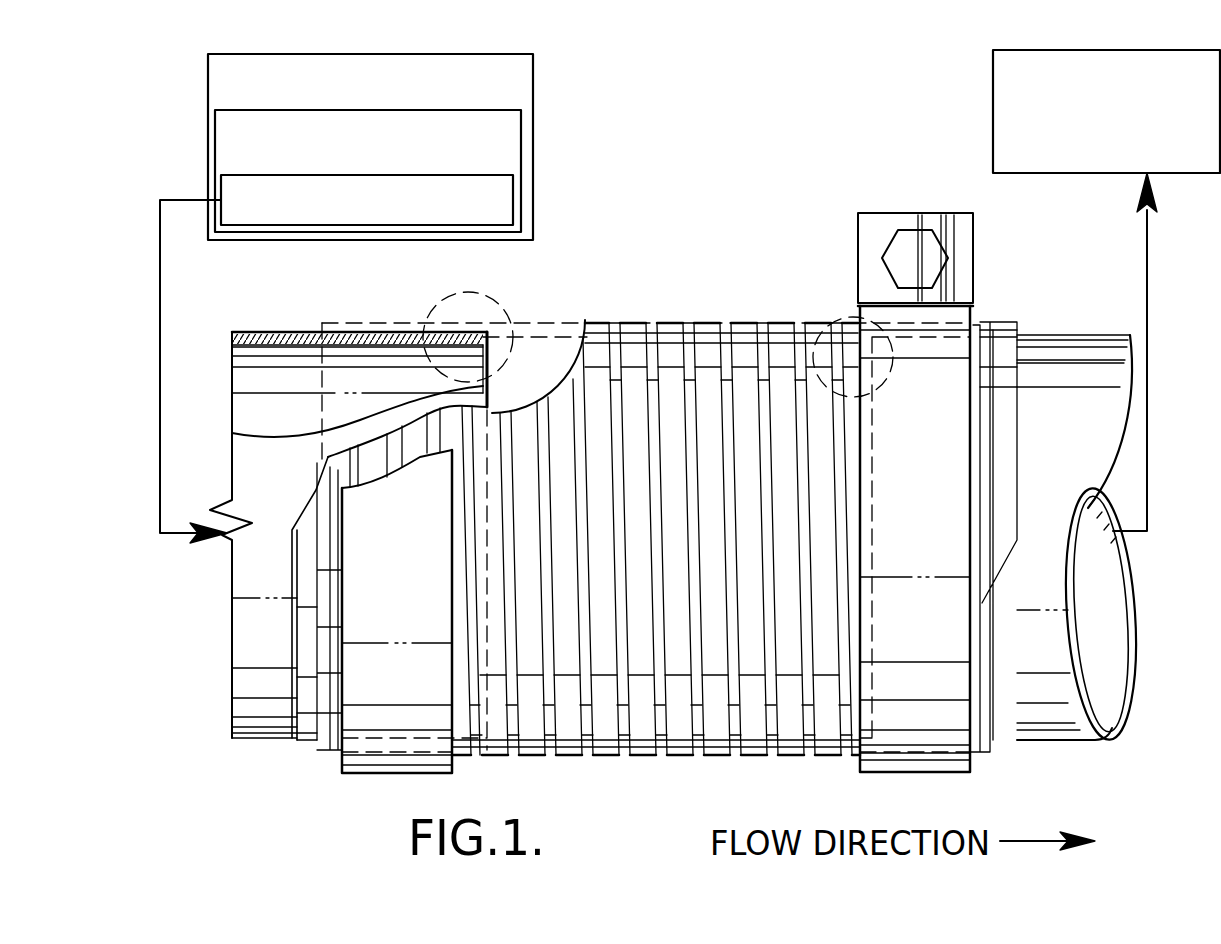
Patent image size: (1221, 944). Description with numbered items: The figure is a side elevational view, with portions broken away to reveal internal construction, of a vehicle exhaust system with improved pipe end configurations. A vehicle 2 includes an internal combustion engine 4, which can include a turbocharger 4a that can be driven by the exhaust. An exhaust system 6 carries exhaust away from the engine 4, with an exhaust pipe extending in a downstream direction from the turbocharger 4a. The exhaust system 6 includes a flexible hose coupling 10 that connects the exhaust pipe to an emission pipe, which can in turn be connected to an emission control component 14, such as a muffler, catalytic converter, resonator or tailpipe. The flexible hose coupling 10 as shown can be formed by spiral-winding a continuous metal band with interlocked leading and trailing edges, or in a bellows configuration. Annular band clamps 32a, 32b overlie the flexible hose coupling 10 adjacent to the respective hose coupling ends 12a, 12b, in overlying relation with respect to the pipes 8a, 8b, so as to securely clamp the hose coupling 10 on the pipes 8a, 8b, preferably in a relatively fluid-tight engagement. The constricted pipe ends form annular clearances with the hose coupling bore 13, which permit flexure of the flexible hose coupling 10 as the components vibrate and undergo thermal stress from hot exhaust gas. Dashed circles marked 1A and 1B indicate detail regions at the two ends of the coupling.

The vehicle 2 is at (514, 86).
The internal combustion engine 4 is at (514, 144).
The turbocharger 4a is at (513, 186).
The exhaust system 6 is at (622, 168).
The pipe 8a is at (272, 635).
The pipe 8b is at (1048, 662).
The flexible hose coupling 10 is at (585, 322).
The hose coupling end 12a is at (292, 722).
The hose coupling end 12b is at (990, 723).
The hose coupling bore 13 is at (550, 368).
The emission control component 14 is at (1210, 118).
The annular band clamp 32a is at (423, 701).
The annular band clamp 32b is at (930, 650).
The detail area 1A is at (440, 305).
The detail area 1B is at (842, 317).